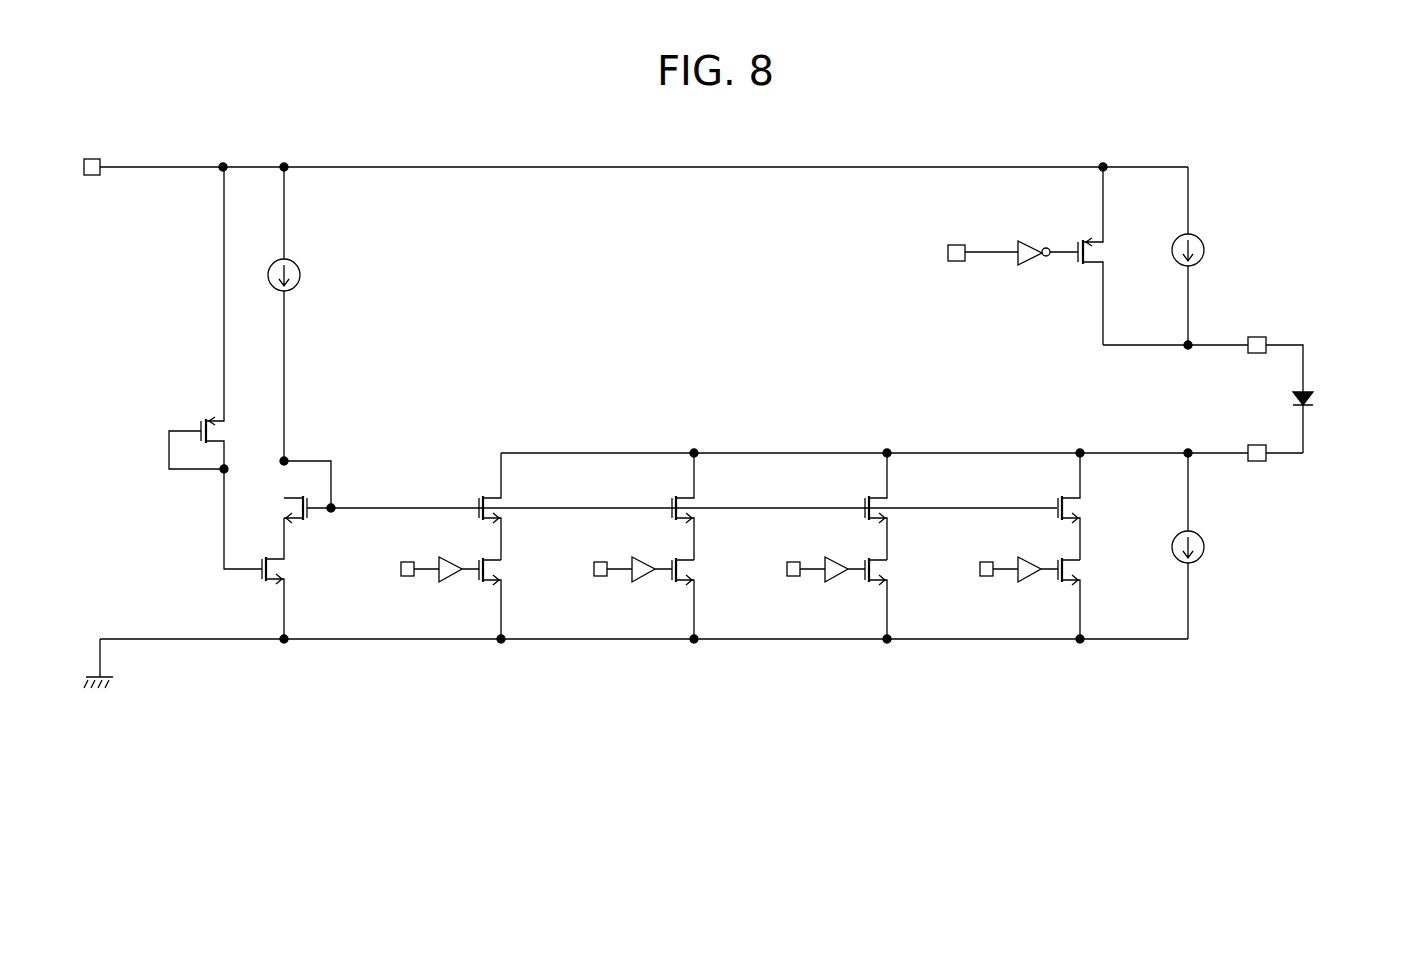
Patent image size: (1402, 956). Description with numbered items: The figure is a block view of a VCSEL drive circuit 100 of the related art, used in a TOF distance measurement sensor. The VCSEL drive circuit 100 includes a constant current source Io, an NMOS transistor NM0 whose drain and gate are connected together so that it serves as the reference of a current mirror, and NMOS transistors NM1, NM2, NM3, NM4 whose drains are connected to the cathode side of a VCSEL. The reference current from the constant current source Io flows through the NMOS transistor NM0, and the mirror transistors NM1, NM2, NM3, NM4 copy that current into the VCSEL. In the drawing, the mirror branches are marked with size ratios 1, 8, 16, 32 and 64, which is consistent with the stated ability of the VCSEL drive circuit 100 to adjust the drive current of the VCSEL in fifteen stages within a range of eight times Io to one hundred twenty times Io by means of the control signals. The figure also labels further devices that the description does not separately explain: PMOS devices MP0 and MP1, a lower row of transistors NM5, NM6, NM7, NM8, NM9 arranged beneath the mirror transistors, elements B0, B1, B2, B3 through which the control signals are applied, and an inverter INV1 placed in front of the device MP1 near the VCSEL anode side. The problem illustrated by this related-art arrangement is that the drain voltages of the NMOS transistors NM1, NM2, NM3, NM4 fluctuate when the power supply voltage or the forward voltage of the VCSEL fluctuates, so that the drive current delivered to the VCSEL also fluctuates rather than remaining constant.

The VCSEL drive circuit 100 is at (1288, 156).
The unit-size current mirror transistor pair NM0/NM5 (x1) 1 is at (281, 548).
The x8 current mirror branch NM1/NM6 8 is at (439, 546).
The x16 current mirror branch NM2/NM7 16 is at (637, 546).
The x32 current mirror branch NM3/NM8 32 is at (828, 546).
The x64 current mirror branch NM4/NM9 64 is at (1022, 546).
The constant current source Io is at (300, 314).
The PMOS transistor MP0 is at (212, 368).
The PMOS switch transistor MP1 is at (1104, 256).
The NMOS transistor NM0 is at (282, 495).
The NMOS transistor NM1 is at (472, 506).
The NMOS transistor NM2 is at (663, 506).
The NMOS transistor NM3 is at (856, 506).
The NMOS transistor NM4 is at (1049, 506).
The NMOS transistor NM5 is at (256, 578).
The NMOS switch transistor NM6 is at (472, 598).
The NMOS switch transistor NM7 is at (663, 598).
The NMOS switch transistor NM8 is at (856, 598).
The NMOS switch transistor NM9 is at (1051, 598).
The buffer B0 is at (406, 557).
The buffer B1 is at (601, 557).
The buffer B2 is at (792, 557).
The buffer B3 is at (986, 560).
The inverter INV1 is at (977, 239).
The element VCSEL is at (1344, 421).